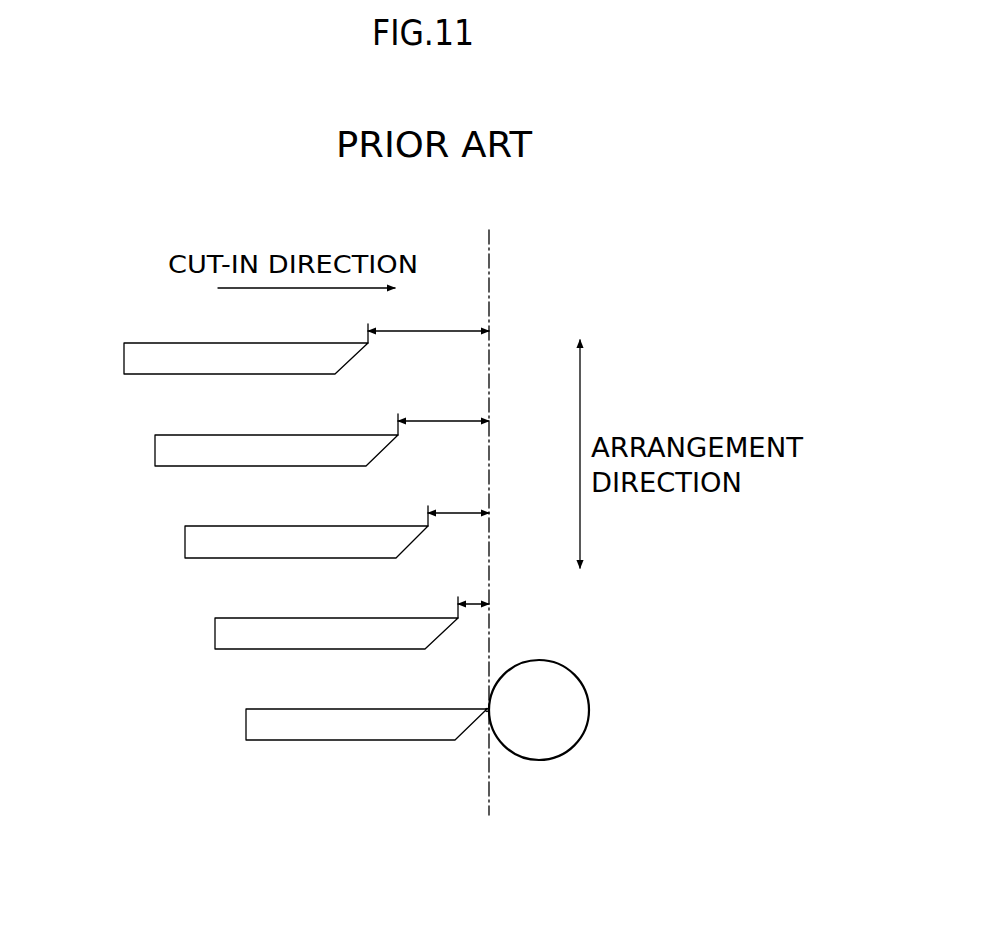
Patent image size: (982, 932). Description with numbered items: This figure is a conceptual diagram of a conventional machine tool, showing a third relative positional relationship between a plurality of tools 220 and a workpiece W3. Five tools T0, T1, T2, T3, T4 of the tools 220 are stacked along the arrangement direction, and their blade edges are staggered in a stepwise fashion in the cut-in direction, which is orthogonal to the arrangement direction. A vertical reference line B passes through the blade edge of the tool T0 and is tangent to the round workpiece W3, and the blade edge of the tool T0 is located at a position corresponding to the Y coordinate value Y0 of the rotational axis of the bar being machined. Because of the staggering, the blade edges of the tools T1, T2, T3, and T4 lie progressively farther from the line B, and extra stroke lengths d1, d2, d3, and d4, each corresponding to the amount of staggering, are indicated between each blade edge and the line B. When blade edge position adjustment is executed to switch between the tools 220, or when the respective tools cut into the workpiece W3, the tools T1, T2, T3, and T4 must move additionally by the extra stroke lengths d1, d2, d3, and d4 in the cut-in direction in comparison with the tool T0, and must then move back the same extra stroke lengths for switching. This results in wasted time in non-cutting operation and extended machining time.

The tool T0 is at (252, 725).
The tool T1 is at (222, 633).
The tool T2 is at (192, 540).
The tool T3 is at (176, 460).
The tool T4 is at (140, 351).
The tools 220 is at (162, 451).
The workpiece W3 is at (578, 710).
The Y coordinate value Y0 is at (487, 712).
The reference line B is at (488, 511).
The extra stroke length d1 is at (473, 598).
The extra stroke length d2 is at (458, 507).
The extra stroke length d3 is at (443, 416).
The extra stroke length d4 is at (428, 325).